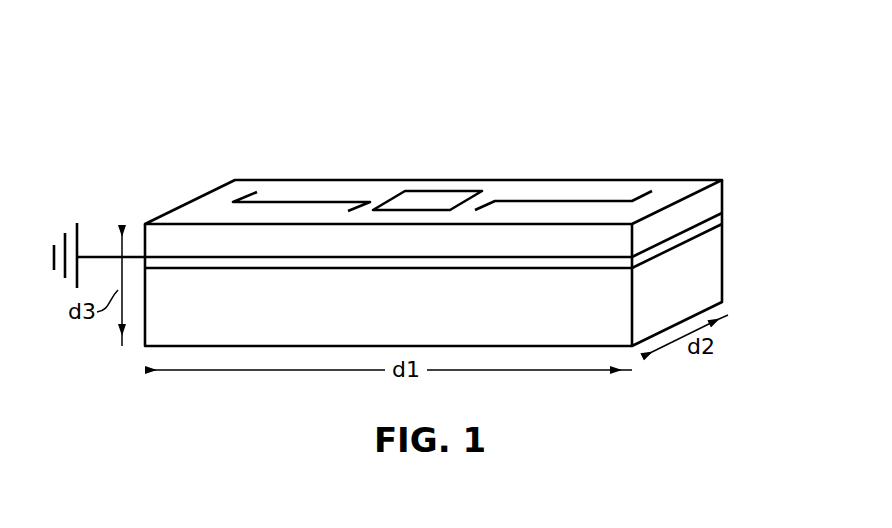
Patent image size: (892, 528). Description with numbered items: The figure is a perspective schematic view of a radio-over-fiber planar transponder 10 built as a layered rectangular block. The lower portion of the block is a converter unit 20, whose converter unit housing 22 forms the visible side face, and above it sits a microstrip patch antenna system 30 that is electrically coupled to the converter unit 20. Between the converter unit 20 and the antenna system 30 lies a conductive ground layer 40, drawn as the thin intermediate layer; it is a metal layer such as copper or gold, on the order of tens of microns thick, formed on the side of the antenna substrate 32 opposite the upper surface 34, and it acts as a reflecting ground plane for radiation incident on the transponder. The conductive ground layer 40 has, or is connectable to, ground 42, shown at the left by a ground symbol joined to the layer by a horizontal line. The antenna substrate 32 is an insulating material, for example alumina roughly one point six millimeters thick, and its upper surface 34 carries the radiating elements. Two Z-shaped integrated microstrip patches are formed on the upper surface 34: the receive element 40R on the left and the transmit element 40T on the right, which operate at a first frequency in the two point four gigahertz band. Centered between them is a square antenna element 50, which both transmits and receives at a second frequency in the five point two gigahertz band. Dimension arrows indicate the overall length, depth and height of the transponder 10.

The RoF planar transponder 10 is at (231, 118).
The converter unit 20 is at (698, 280).
The converter unit housing 22 is at (600, 312).
The microstrip patch antenna system 30 is at (355, 152).
The antenna substrate 32 is at (712, 200).
The upper surface 34 is at (687, 192).
The conductive ground layer 40 is at (712, 224).
The receive microstrip antenna element 40R is at (233, 199).
The transmit microstrip antenna element 40T is at (584, 201).
The ground 42 is at (91, 219).
The square antenna element 50 is at (450, 200).